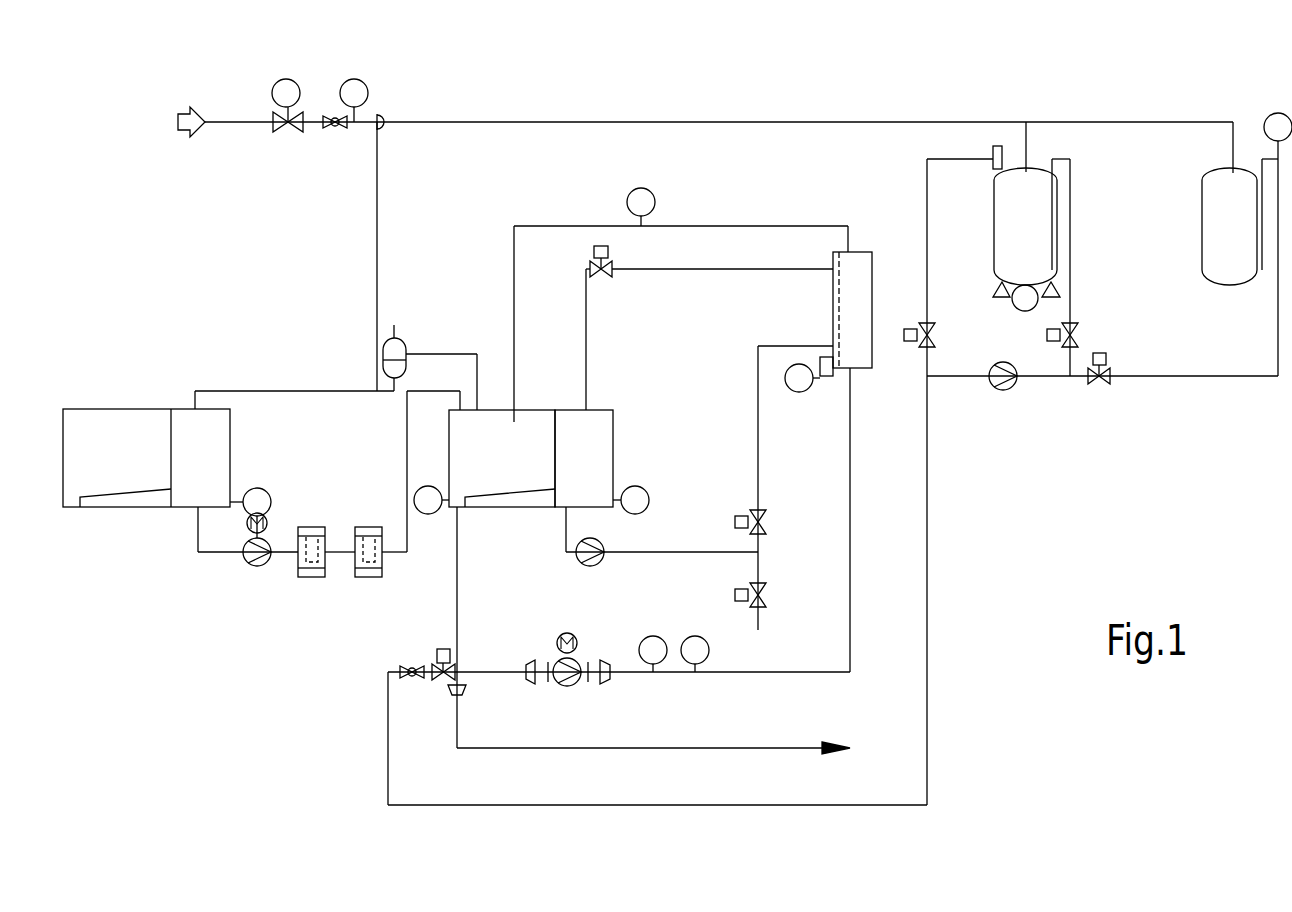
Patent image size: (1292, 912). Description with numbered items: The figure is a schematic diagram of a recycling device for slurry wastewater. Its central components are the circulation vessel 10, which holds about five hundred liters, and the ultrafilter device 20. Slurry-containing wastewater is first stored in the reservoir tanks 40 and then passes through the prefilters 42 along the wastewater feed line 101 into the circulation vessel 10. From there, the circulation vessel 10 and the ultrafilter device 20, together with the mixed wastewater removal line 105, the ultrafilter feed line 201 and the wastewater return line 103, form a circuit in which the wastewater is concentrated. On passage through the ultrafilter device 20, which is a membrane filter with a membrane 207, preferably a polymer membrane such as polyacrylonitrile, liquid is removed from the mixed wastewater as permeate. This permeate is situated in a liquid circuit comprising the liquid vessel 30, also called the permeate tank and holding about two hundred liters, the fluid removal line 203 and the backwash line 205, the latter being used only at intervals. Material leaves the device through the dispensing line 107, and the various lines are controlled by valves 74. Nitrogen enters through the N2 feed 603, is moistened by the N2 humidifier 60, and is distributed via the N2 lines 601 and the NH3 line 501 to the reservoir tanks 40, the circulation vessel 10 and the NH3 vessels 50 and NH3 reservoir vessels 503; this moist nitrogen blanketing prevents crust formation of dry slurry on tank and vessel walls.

The circulation vessel 10 is at (533, 432).
The ultrafilter device 20 is at (860, 287).
The liquid vessel 30 is at (598, 452).
The reservoir tanks 40 is at (192, 492).
The prefilters 42 is at (365, 578).
The NH3 vessels 50 is at (1034, 190).
The N2 humidifier 60 is at (397, 336).
The valves 74 is at (440, 682).
The wastewater feed line 101 is at (404, 444).
The wastewater return line 103 is at (522, 220).
The mixed wastewater removal line 105 is at (442, 606).
The dispensing line 107 is at (790, 728).
The ultrafilter feed line 201 is at (852, 552).
The fluid removal line 203 is at (776, 266).
The backwash line 205 is at (768, 456).
The membrane 207 is at (844, 272).
The NH3 line 501 is at (1030, 380).
The NH3 reservoir vessels 503 is at (1245, 187).
The N2 lines 601 is at (462, 118).
The N2 feed 603 is at (176, 118).